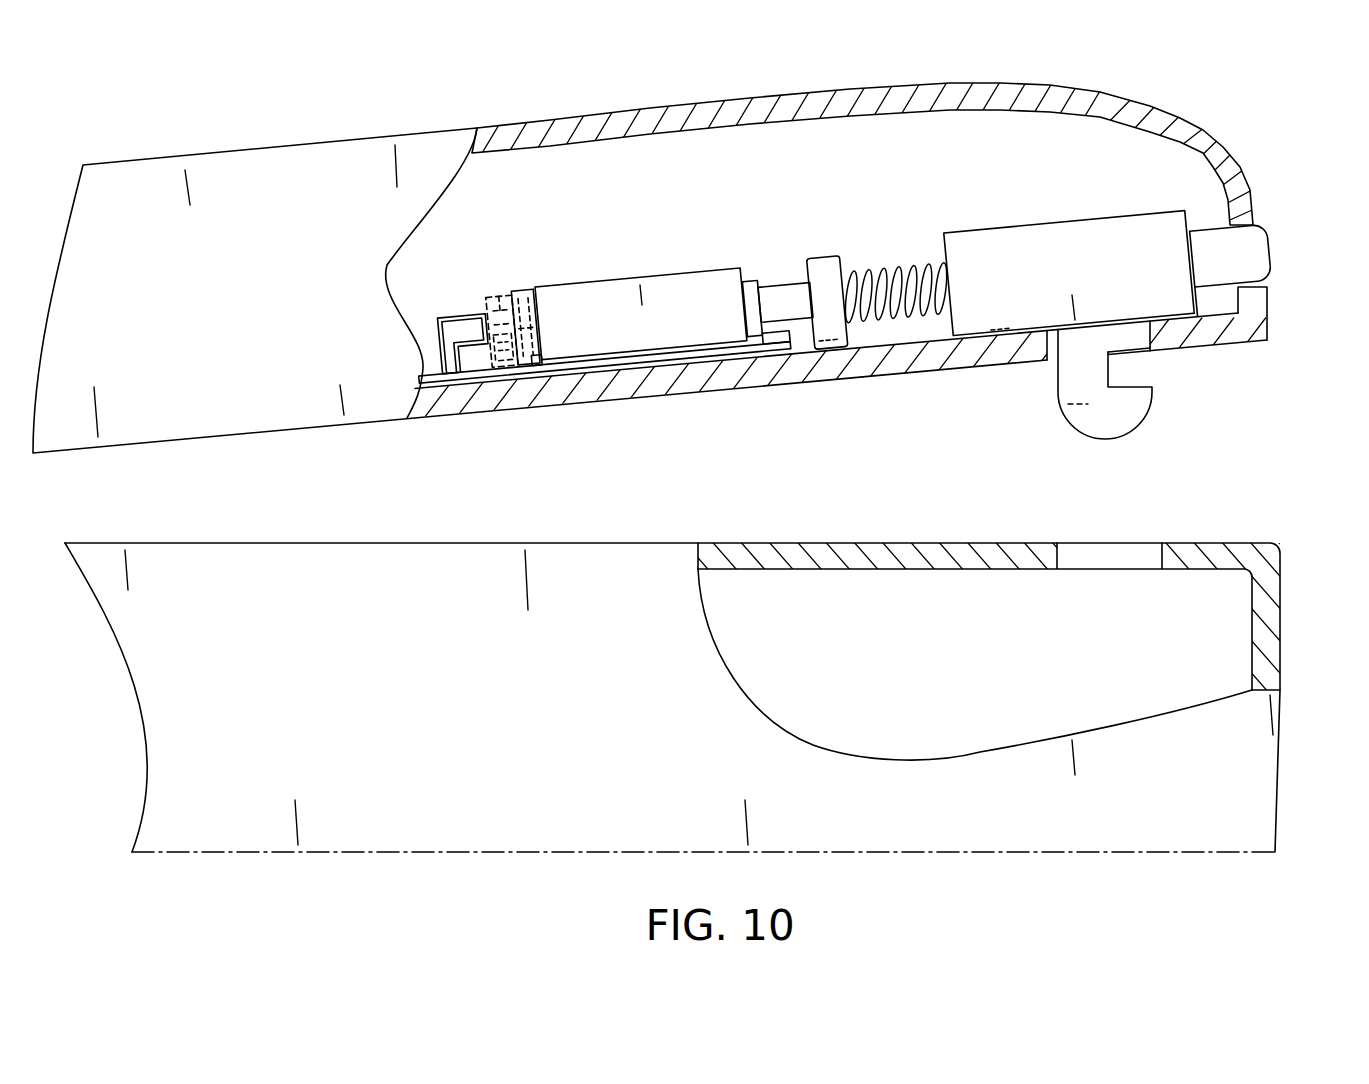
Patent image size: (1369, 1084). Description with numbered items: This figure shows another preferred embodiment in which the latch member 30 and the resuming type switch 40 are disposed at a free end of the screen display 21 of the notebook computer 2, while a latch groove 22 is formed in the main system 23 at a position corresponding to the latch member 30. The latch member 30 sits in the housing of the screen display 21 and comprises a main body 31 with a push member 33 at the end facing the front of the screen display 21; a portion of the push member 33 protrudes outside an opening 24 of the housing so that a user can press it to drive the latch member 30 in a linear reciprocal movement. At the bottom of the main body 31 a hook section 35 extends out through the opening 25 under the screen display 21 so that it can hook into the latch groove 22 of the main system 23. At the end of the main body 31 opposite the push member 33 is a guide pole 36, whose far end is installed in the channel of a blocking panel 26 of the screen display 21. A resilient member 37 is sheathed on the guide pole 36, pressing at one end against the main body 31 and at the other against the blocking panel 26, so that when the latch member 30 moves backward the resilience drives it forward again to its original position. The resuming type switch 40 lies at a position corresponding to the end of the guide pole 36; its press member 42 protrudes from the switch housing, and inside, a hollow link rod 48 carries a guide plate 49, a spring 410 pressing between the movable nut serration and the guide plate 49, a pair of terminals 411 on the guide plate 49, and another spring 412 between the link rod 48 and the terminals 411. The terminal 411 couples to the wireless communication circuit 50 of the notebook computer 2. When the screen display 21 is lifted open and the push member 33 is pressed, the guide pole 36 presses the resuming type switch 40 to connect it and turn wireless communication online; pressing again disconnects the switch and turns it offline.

The notebook computer 2 is at (1246, 126).
The screen display 21 is at (1237, 190).
The latch groove 22 is at (1115, 560).
The main system 23 is at (1270, 627).
The opening 24 is at (1263, 296).
The opening 25 is at (1135, 343).
The blocking panel 26 is at (825, 272).
The latch member 30 is at (1010, 297).
The main body 31 is at (1078, 268).
The push member 33 is at (1245, 253).
The hook section 35 is at (1120, 408).
The guide pole 36 is at (795, 306).
The resilient member 37 is at (878, 312).
The resuming type switch 40 is at (668, 318).
The press member 42 is at (752, 310).
The link rod 48 is at (530, 290).
The guide plate 49 is at (503, 358).
The spring 410 is at (536, 370).
The terminal 411 is at (477, 347).
The spring 412 is at (490, 297).
The wireless communication circuit 50 is at (433, 384).